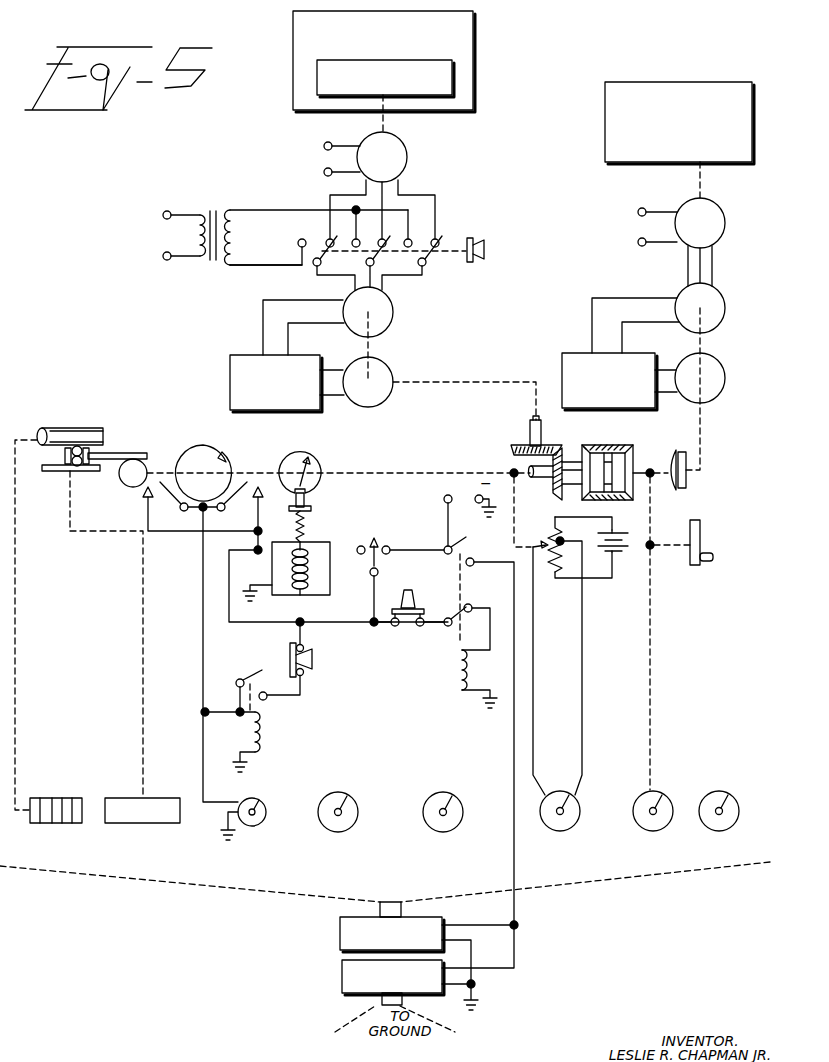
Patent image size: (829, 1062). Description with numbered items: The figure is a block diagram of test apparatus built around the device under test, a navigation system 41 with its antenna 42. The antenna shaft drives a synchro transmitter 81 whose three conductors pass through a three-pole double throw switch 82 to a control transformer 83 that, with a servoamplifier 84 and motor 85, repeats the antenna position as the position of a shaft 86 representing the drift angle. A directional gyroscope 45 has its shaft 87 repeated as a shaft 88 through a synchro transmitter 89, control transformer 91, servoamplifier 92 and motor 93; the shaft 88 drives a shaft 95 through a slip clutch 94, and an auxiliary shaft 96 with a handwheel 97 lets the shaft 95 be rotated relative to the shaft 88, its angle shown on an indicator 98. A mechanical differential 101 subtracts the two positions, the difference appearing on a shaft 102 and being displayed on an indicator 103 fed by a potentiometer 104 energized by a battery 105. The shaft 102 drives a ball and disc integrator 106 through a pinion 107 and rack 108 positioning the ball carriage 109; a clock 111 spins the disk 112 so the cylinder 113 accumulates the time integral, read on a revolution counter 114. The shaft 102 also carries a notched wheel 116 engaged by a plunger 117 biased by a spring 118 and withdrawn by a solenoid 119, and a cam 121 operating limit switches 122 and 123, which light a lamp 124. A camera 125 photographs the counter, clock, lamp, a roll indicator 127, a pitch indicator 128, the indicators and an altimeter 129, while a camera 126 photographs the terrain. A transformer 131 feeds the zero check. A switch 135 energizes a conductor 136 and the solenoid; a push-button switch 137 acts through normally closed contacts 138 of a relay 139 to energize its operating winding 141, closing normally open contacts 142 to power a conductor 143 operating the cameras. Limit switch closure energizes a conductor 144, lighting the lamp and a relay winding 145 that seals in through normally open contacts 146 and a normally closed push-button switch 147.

The navigation system 41 is at (293, 33).
The antenna 42 is at (317, 62).
The directional gyroscope 45 is at (605, 101).
The synchro transmitter 81 is at (398, 143).
The three-pole double throw switch 82 is at (455, 249).
The control transformer 83 is at (393, 312).
The servoamplifier 84 is at (230, 366).
The motor 85 is at (387, 398).
The shaft 86 is at (424, 382).
The shaft 87 is at (700, 178).
The shaft 88 is at (704, 434).
The synchro transmitter 89 is at (717, 214).
The control transformer 91 is at (717, 298).
The servoamplifier 92 is at (578, 353).
The motor 93 is at (720, 366).
The slip clutch 94 is at (687, 489).
The shaft 95 is at (645, 470).
The auxiliary shaft 96 is at (655, 624).
The handwheel 97 is at (702, 529).
The indicator 98 is at (668, 797).
The mechanical differential 101 is at (610, 440).
The shaft 102 is at (436, 473).
The indicator 103 is at (580, 812).
The potentiometer 104 is at (552, 538).
The battery 105 is at (622, 549).
The ball and disc integrator 106 is at (70, 415).
The pinion 107 is at (134, 489).
The rack 108 is at (112, 453).
The ball carriage 109 is at (79, 476).
The clock 111 is at (158, 798).
The disk 112 is at (55, 480).
The cylinder 113 is at (92, 428).
The revolution counter 114 is at (62, 798).
The wheel 116 is at (318, 465).
The plunger 117 is at (311, 508).
The spring 118 is at (306, 531).
The solenoid 119 is at (309, 577).
The cam 121 is at (196, 450).
The limit switch 122 is at (178, 510).
The limit switch 123 is at (250, 512).
The lamp 124 is at (263, 805).
The camera 125 is at (340, 937).
The camera 126 is at (342, 981).
The roll indicator 127 is at (354, 797).
The pitch indicator 128 is at (459, 797).
The altimeter 129 is at (734, 797).
The transformer 131 is at (210, 262).
The switch 135 is at (379, 574).
The conductor 136 is at (276, 624).
The push-button switch 137 is at (403, 596).
The normally closed contacts 138 is at (460, 607).
The relay 139 is at (468, 567).
The operating winding 141 is at (462, 650).
The normally open contacts 142 is at (470, 550).
The conductor 143 is at (517, 914).
The conductor 144 is at (203, 625).
The relay winding 145 is at (256, 738).
The normally open contacts 146 is at (250, 672).
The push-button switch 147 is at (306, 660).